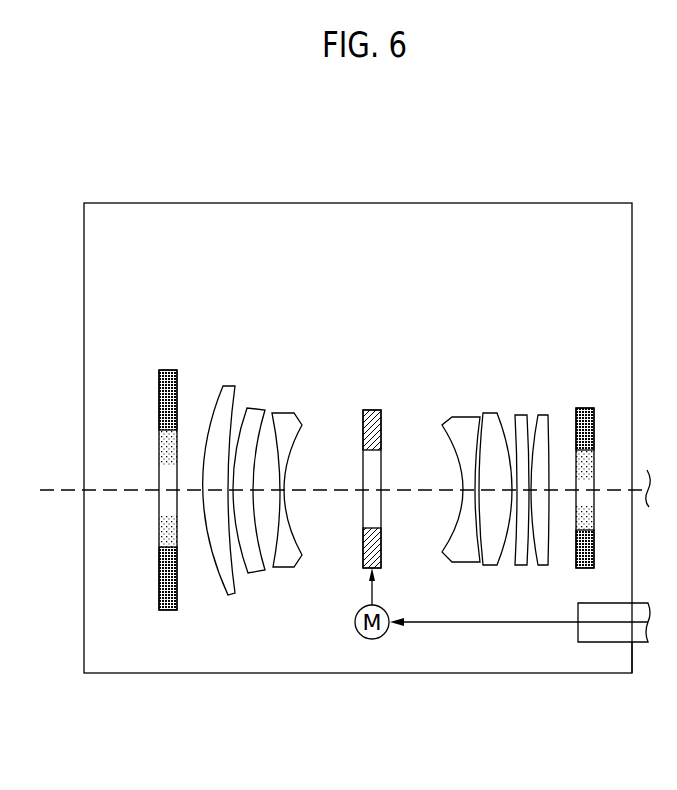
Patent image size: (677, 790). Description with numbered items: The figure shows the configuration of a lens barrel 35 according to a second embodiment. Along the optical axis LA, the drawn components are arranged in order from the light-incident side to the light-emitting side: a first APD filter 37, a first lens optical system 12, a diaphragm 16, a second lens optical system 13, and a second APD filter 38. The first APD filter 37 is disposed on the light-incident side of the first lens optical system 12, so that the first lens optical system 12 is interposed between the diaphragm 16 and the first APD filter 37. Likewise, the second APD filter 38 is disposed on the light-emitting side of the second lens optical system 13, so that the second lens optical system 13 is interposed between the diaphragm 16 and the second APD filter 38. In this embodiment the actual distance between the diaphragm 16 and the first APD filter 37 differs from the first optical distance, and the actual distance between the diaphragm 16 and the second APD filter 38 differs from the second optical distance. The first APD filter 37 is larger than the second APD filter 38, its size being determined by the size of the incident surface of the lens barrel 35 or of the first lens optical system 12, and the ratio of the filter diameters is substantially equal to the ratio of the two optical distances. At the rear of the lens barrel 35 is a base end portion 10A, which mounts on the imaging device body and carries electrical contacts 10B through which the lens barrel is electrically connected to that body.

The lens barrel 35 is at (376, 202).
The first APD filter 37 is at (168, 370).
The first lens optical system 12 is at (303, 390).
The diaphragm 16 is at (372, 410).
The second lens optical system 13 is at (560, 415).
The second APD filter 38 is at (582, 408).
The base end portion 10A is at (632, 655).
The electrical contacts 10B is at (588, 642).
The optical axis LA is at (101, 490).